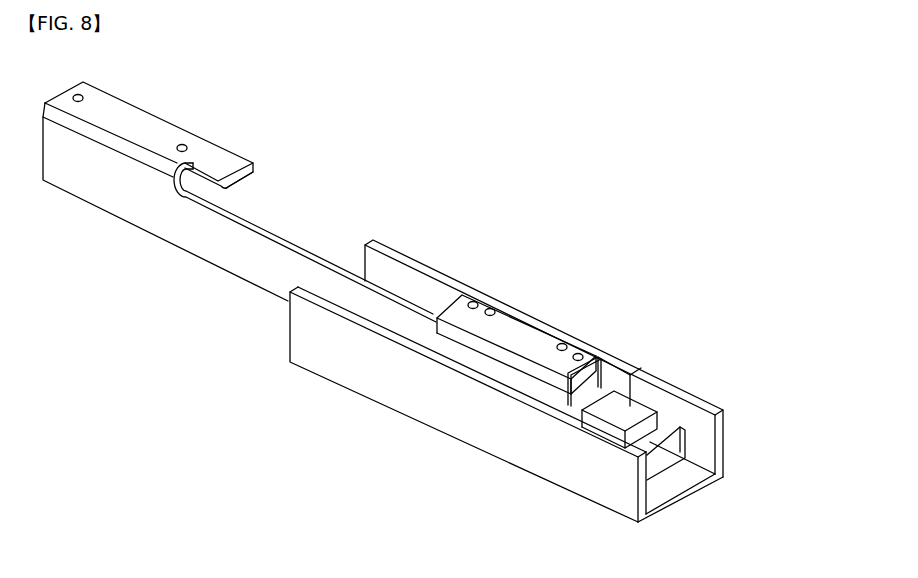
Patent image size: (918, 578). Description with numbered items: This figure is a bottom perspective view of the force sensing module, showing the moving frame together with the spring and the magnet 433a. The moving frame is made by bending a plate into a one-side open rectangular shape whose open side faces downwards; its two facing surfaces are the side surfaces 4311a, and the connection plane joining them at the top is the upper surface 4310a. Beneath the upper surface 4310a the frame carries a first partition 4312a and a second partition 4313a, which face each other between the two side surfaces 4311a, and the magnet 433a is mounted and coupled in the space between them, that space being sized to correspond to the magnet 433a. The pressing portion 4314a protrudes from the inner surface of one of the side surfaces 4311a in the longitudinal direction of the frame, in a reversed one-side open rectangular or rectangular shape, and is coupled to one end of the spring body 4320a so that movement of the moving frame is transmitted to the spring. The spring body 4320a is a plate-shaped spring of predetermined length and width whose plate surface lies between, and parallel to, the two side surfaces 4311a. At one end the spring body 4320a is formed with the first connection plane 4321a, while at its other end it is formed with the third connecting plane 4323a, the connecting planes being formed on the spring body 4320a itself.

The upper surface 4310a is at (555, 392).
The side surfaces 4311a is at (675, 407).
The first partition 4312a is at (547, 405).
The second partition 4313a is at (675, 450).
The pressing portion 4314a is at (596, 378).
The spring body 4320a is at (145, 208).
The first connection plane 4321a is at (148, 128).
The third connecting plane 4323a is at (508, 327).
The magnet 433a is at (627, 400).